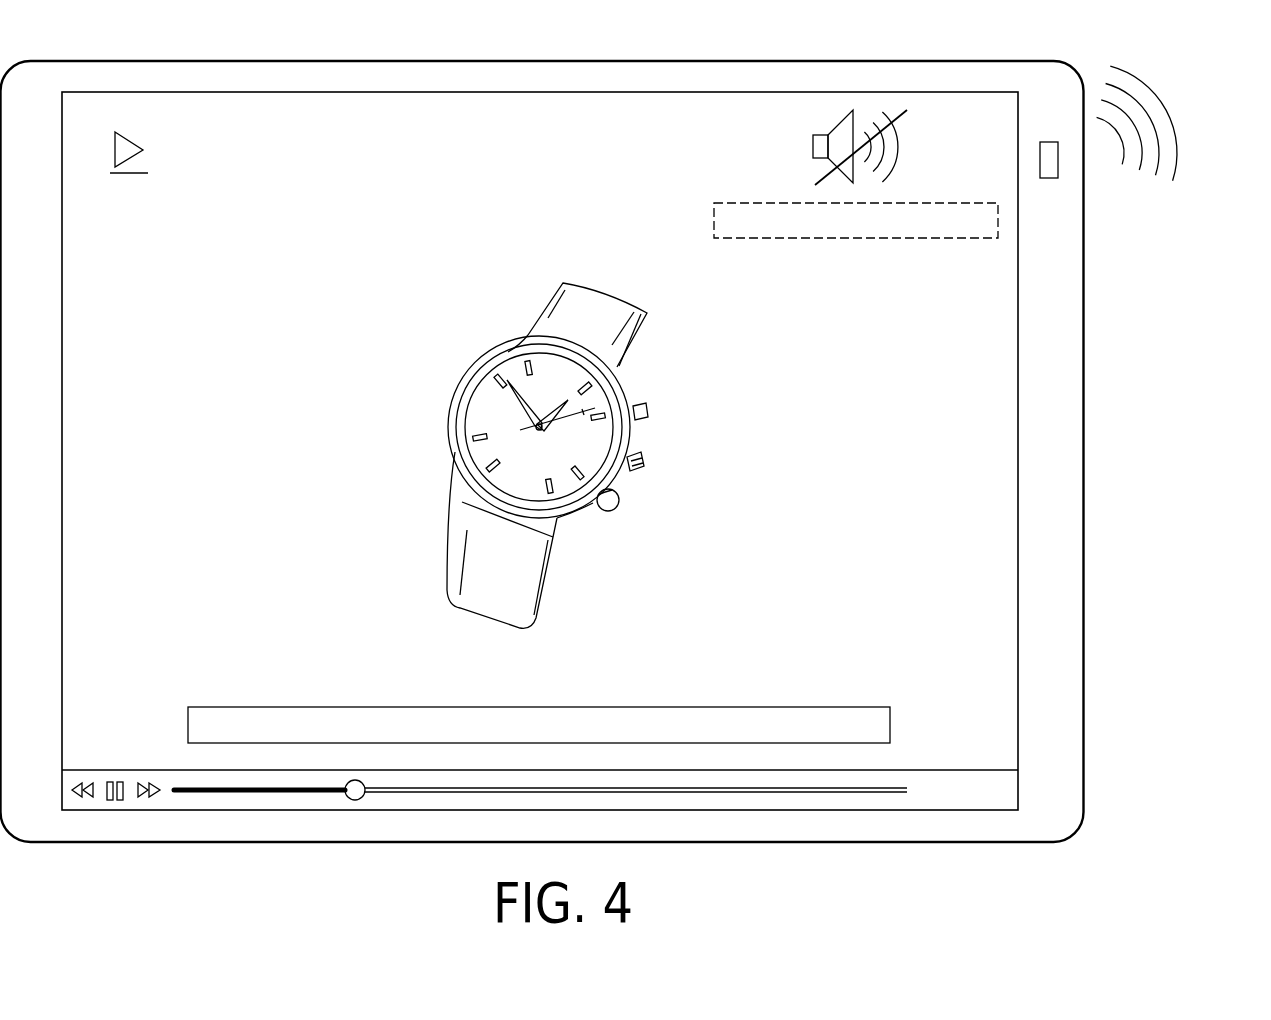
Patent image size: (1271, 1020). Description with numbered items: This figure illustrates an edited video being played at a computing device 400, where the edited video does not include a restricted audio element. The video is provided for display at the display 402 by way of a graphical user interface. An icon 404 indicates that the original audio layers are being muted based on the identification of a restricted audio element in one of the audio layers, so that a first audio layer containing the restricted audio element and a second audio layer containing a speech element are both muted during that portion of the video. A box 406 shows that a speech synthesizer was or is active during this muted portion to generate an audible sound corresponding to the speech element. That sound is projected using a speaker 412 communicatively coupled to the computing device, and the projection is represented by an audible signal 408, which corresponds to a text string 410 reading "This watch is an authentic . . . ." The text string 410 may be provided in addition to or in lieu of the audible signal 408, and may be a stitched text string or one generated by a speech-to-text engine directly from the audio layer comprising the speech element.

The computing device 400 is at (120, 61).
The display 402 is at (200, 92).
The icon 404 is at (825, 135).
The box 406 is at (862, 240).
The audible signal 408 is at (1175, 165).
The text string 410 is at (763, 706).
The speaker 412 is at (1047, 179).